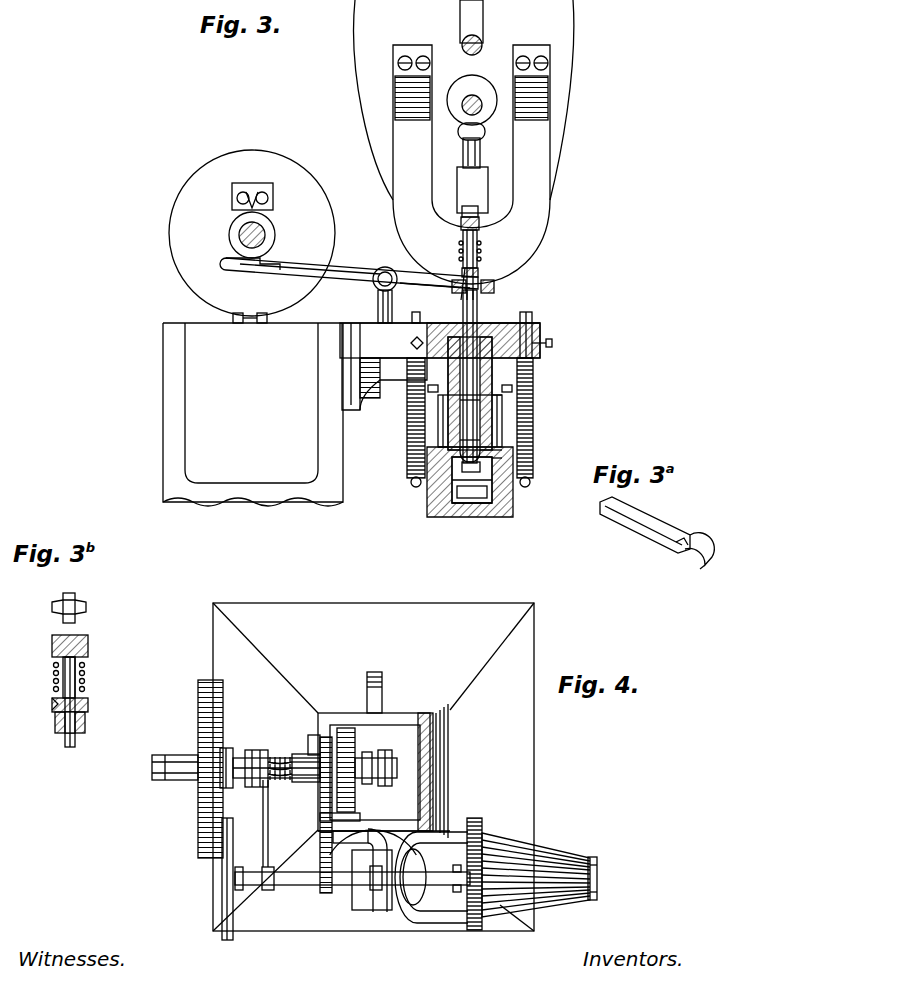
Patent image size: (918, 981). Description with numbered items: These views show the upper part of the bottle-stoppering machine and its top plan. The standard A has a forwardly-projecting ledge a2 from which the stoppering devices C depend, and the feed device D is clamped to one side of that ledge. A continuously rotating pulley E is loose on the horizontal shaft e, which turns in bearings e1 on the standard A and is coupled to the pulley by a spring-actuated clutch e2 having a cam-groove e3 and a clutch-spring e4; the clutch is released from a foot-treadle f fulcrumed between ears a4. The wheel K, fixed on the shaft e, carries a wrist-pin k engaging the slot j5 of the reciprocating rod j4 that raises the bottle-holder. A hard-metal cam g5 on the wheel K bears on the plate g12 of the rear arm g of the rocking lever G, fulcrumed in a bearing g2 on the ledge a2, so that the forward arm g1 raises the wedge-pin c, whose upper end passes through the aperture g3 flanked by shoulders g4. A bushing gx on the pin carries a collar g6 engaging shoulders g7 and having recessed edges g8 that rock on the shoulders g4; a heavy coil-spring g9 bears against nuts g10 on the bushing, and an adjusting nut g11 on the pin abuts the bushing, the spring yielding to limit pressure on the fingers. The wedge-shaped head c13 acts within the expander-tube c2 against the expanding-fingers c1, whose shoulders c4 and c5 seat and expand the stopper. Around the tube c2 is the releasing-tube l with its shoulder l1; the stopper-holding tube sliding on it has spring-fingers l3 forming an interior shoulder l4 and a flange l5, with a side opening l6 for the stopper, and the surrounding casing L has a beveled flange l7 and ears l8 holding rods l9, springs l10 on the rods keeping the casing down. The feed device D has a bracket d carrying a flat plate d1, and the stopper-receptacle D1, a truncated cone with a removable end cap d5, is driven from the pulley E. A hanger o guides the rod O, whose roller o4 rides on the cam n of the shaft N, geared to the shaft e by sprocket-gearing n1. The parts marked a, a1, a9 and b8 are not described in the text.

In FIG. 3, the feed device D is at (481, 100).
In FIG. 4, the feed device D is at (510, 824).
In FIG. 3, the magnet yoke / casing a is at (394, 177).
In FIG. 4, the magnet yoke / casing a is at (373, 767).
In FIG. 3, the yoke upper part a1 is at (412, 19).
In FIG. 3, the upper rod a9 is at (483, 12).
In FIG. 3, the forwardly-projecting ledge a2 is at (483, 43).
In FIG. 4, the forwardly-projecting ledge a2 is at (370, 906).
In FIG. 3, the cam n is at (480, 80).
In FIG. 4, the cam n is at (452, 872).
In FIG. 3, the horizontal shaft N is at (462, 108).
In FIG. 3, the roller o4 is at (486, 132).
In FIG. 3, the rod O is at (483, 155).
In FIG. 3, the hanger o is at (489, 182).
In FIG. 3, the wedge-pin-adjusting nut g11 is at (478, 212).
In FIG. 3B, the wedge-pin-adjusting nut g11 is at (80, 620).
In FIG. 3, the nuts g10 is at (479, 224).
In FIG. 3B, the nuts g10 is at (88, 651).
In FIG. 3, the bushing gx is at (478, 250).
In FIG. 3B, the bushing gx is at (55, 724).
In FIG. 3, the recessed lower edges g8 is at (465, 272).
In FIG. 3, the heavy coil-spring g9 is at (480, 265).
In FIG. 3B, the heavy coil-spring g9 is at (83, 680).
In FIG. 3, the collar g6 is at (479, 276).
In FIG. 3B, the collar g6 is at (88, 712).
In FIG. 3, the aperture g3 is at (494, 288).
In FIG. 3A, the aperture g3 is at (686, 558).
In FIG. 4, the aperture g3 is at (383, 890).
In FIG. 3, the wedge-pin c is at (478, 302).
In FIG. 3B, the wedge-pin c is at (75, 743).
In FIG. 3, the rocking lever G is at (349, 265).
In FIG. 4, the rocking lever G is at (347, 826).
In FIG. 3, the rear arm g is at (300, 265).
In FIG. 4, the rear arm g is at (322, 815).
In FIG. 3, the forward arm g1 is at (435, 281).
In FIG. 3A, the forward arm g1 is at (650, 520).
In FIG. 4, the forward arm g1 is at (380, 870).
In FIG. 3, the bearing g2 is at (370, 306).
In FIG. 3, the wheel K is at (252, 233).
In FIG. 4, the wheel K is at (345, 728).
In FIG. 3, the horizontal shaft e is at (240, 232).
In FIG. 4, the horizontal shaft e is at (152, 771).
In FIG. 3, the cam g5 is at (238, 196).
In FIG. 3, the bearing-plate g12 is at (262, 266).
In FIG. 3, the vertically-reciprocating rod j4 is at (233, 320).
In FIG. 4, the vertically-reciprocating rod j4 is at (372, 766).
In FIG. 3, the longitudinally-extending slot j5 is at (268, 320).
In FIG. 3, the standard A is at (351, 414).
In FIG. 4, the standard A is at (392, 713).
In FIG. 3, the stoppering devices C is at (422, 392).
In FIG. 3, the vertical rods l9 is at (570, 318).
In FIG. 3, the stopper-releasing tube l is at (534, 380).
In FIG. 3, the expander-tube c2 is at (500, 394).
In FIG. 3, the spring-fingers l3 is at (494, 410).
In FIG. 3, the annular shoulder l1 is at (500, 421).
In FIG. 3, the springs l10 is at (408, 386).
In FIG. 3, the expanding-fingers c1 is at (455, 433).
In FIG. 3, the upper annular shoulder c4 is at (500, 451).
In FIG. 3, the lower annular shoulder c5 is at (500, 459).
In FIG. 3, the wedge-shaped head c13 is at (483, 468).
In FIG. 3, the cylindrical casing L is at (427, 500).
In FIG. 3, the inwardly-projecting annular flange l5 is at (490, 483).
In FIG. 3, the beveled flange l7 is at (480, 505).
In FIG. 3, the opening l6 is at (468, 492).
In FIG. 3, the ears l8 is at (409, 481).
In FIG. 3, the interior annular shoulder l4 is at (445, 446).
In FIG. 3A, the shoulder g4 is at (674, 545).
In FIG. 3B, the shoulders g7 is at (52, 709).
In FIG. 4, the pulley E is at (198, 718).
In FIG. 4, the bearings e1 is at (182, 779).
In FIG. 4, the spring-actuated clutch e2 is at (240, 772).
In FIG. 4, the cam-groove e3 is at (258, 770).
In FIG. 4, the clutch-spring e4 is at (282, 782).
In FIG. 4, the ears a4 is at (367, 684).
In FIG. 4, the foot-treadle f is at (400, 730).
In FIG. 4, the wrist-pin k is at (390, 773).
In FIG. 4, the sprocket-gearing n1 is at (322, 873).
In FIG. 4, the side plate b8 is at (338, 905).
In FIG. 4, the bracket d is at (452, 925).
In FIG. 4, the circular flat plate d1 is at (472, 822).
In FIG. 4, the stopper-receptacle D1 is at (560, 851).
In FIG. 4, the removable end cap d5 is at (598, 883).